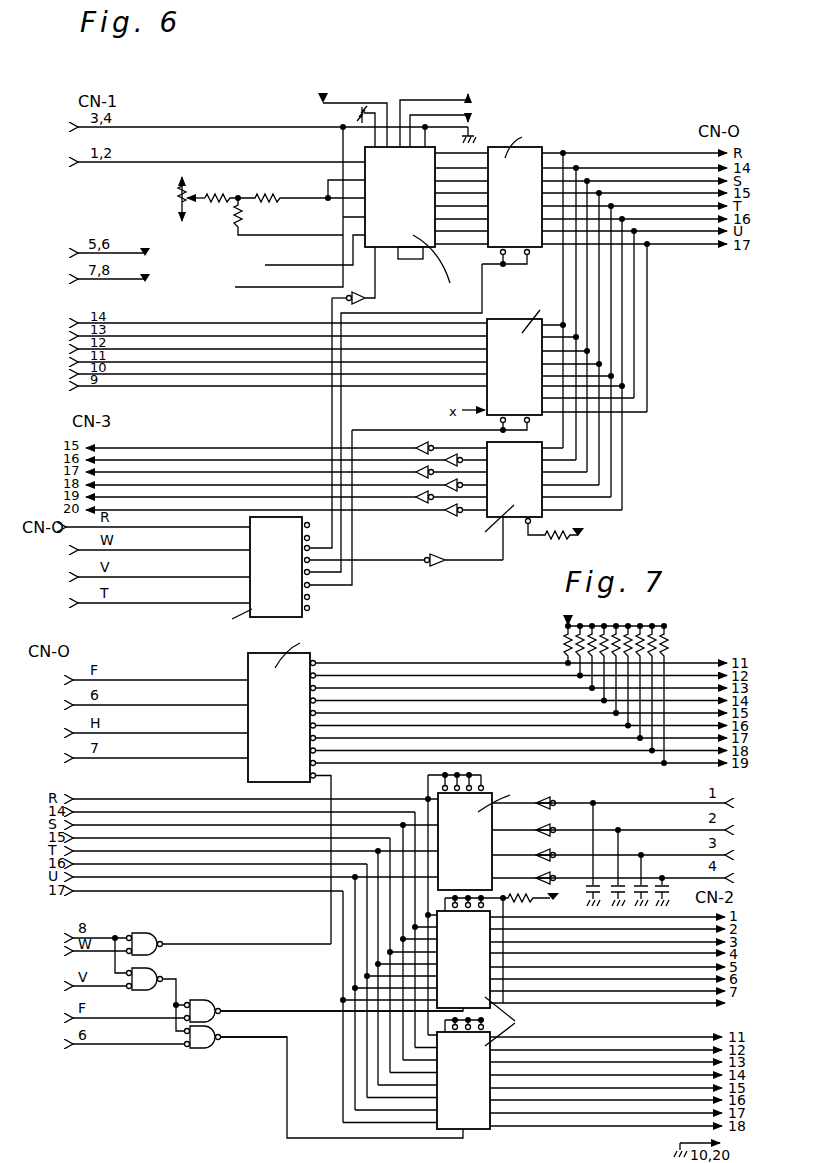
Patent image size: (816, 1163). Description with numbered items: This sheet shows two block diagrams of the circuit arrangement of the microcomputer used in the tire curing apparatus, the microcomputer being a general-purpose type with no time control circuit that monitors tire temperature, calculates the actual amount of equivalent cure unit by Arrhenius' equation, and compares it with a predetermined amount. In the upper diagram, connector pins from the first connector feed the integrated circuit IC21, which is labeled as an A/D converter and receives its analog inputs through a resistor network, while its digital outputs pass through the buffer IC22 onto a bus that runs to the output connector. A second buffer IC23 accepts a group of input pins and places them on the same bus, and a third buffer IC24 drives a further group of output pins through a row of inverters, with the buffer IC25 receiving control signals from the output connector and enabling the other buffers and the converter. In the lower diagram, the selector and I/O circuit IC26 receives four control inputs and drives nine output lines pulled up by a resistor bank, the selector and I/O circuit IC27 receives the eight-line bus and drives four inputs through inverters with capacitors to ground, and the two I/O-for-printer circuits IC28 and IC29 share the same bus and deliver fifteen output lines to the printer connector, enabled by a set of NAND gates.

In FIG. 6, the A/D converter IC21 is at (413, 227).
In FIG. 6, the buffer IC22 is at (537, 188).
In FIG. 6, the buffer IC23 is at (518, 357).
In FIG. 6, the buffer IC24 is at (485, 494).
In FIG. 6, the buffer IC25 is at (243, 574).
In FIG. 7, the selector and I/O IC26 is at (339, 705).
In FIG. 7, the selector and I/O IC27 is at (534, 831).
In FIG. 7, the I/O for printer IC28 is at (471, 951).
In FIG. 7, the I/O for printer IC29 is at (541, 1063).